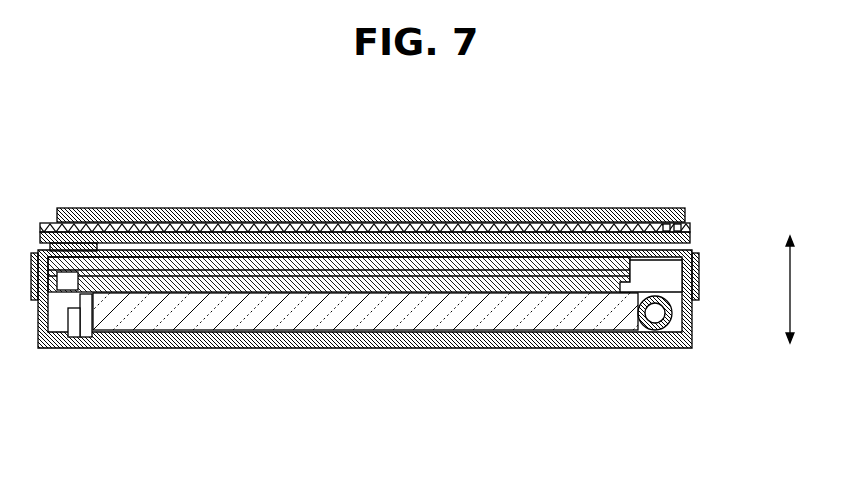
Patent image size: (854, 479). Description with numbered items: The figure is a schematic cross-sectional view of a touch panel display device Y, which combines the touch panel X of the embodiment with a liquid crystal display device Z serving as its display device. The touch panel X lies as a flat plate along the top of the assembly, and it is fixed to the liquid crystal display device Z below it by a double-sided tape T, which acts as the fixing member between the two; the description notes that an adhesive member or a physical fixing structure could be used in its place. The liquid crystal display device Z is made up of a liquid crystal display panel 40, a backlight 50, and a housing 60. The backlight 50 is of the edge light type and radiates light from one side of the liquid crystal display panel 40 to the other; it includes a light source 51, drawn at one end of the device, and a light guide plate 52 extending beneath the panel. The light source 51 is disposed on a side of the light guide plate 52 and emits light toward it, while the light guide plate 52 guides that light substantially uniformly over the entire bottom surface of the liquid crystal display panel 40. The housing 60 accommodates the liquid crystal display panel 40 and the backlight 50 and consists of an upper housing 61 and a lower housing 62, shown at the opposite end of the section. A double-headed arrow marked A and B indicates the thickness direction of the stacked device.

The touch panel X is at (337, 211).
The touch panel display device Y is at (567, 173).
The liquid crystal display device Z is at (277, 347).
The double-sided tape T is at (689, 234).
The liquid crystal display panel 40 is at (640, 266).
The backlight 50 is at (626, 364).
The light source 51 is at (655, 348).
The light guide plate 52 is at (596, 348).
The housing 60 is at (79, 356).
The upper housing 61 is at (32, 299).
The lower housing 62 is at (100, 357).
The direction A is at (791, 272).
The direction B is at (791, 356).